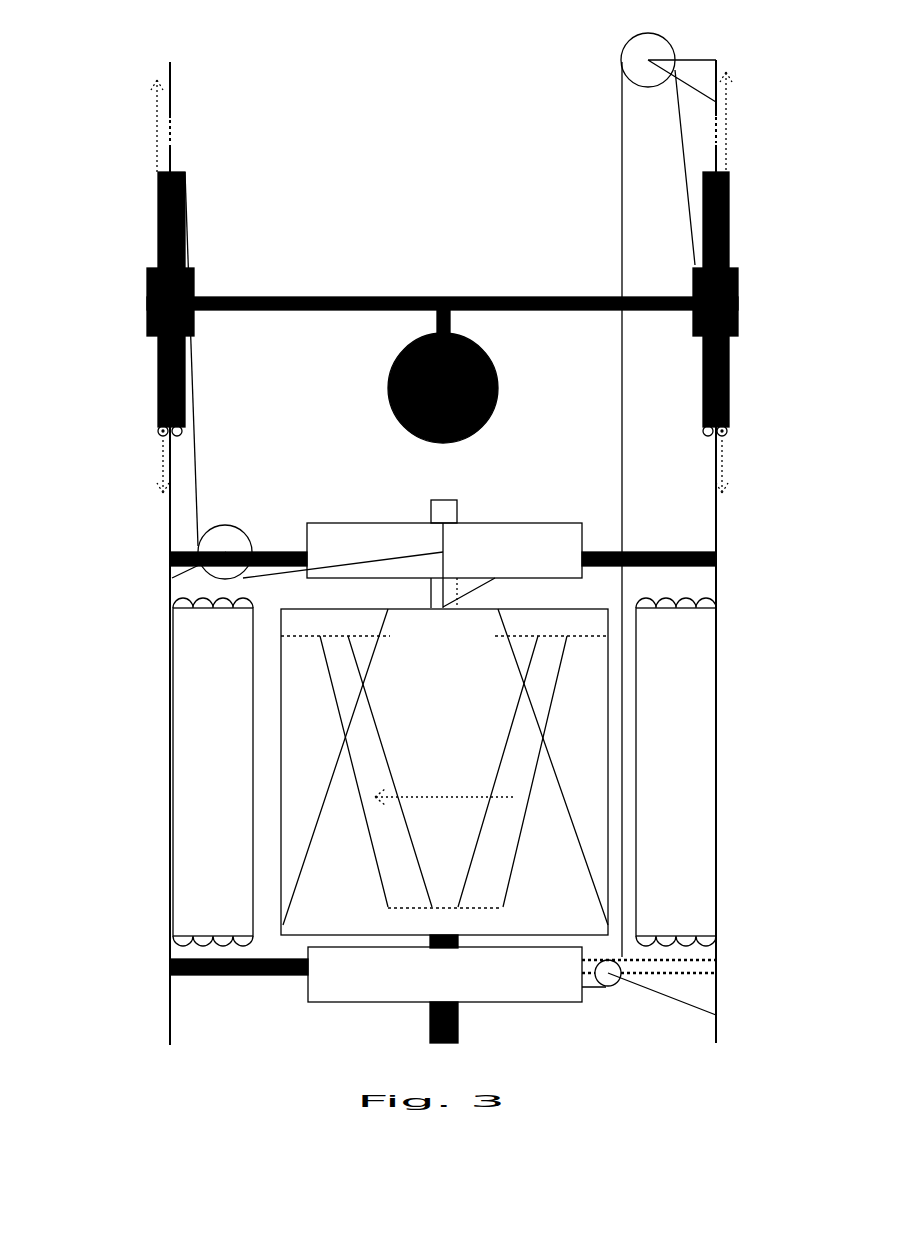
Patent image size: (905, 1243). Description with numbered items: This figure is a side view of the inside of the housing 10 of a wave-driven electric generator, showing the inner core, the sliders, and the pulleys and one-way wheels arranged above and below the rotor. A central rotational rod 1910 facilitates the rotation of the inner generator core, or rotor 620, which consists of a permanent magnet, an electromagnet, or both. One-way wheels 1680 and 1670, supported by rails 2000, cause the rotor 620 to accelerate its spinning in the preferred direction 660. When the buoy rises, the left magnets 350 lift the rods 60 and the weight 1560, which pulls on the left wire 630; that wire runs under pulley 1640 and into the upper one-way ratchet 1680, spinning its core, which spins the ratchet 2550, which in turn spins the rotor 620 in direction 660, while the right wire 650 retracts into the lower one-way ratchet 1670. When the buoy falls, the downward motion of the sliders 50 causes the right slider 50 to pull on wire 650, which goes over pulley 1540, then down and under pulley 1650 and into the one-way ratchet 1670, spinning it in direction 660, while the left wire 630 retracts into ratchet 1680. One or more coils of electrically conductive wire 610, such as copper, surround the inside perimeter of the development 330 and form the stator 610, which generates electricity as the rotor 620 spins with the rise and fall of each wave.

The housing 10 is at (170, 825).
The slider 50 is at (157, 372).
The rod 60 is at (538, 296).
The development 330 is at (690, 578).
The magnet 350 is at (148, 293).
The stator coils 610 is at (198, 635).
The inner generator core (rotor) 620 is at (333, 878).
The wire 630 is at (193, 502).
The wire 650 is at (622, 495).
The preferred direction 660 is at (443, 798).
The pulley 1540 is at (647, 47).
The weight 1560 is at (388, 393).
The pulley 1640 is at (225, 539).
The pulley 1650 is at (610, 987).
The one-way ratchet (one-way wheel) 1670 is at (535, 972).
The one-way ratchet (one-way wheel) 1680 is at (527, 550).
The central rotational rod 1910 is at (443, 510).
The rails 2000 is at (172, 566).
The ratchet 2550 is at (472, 598).